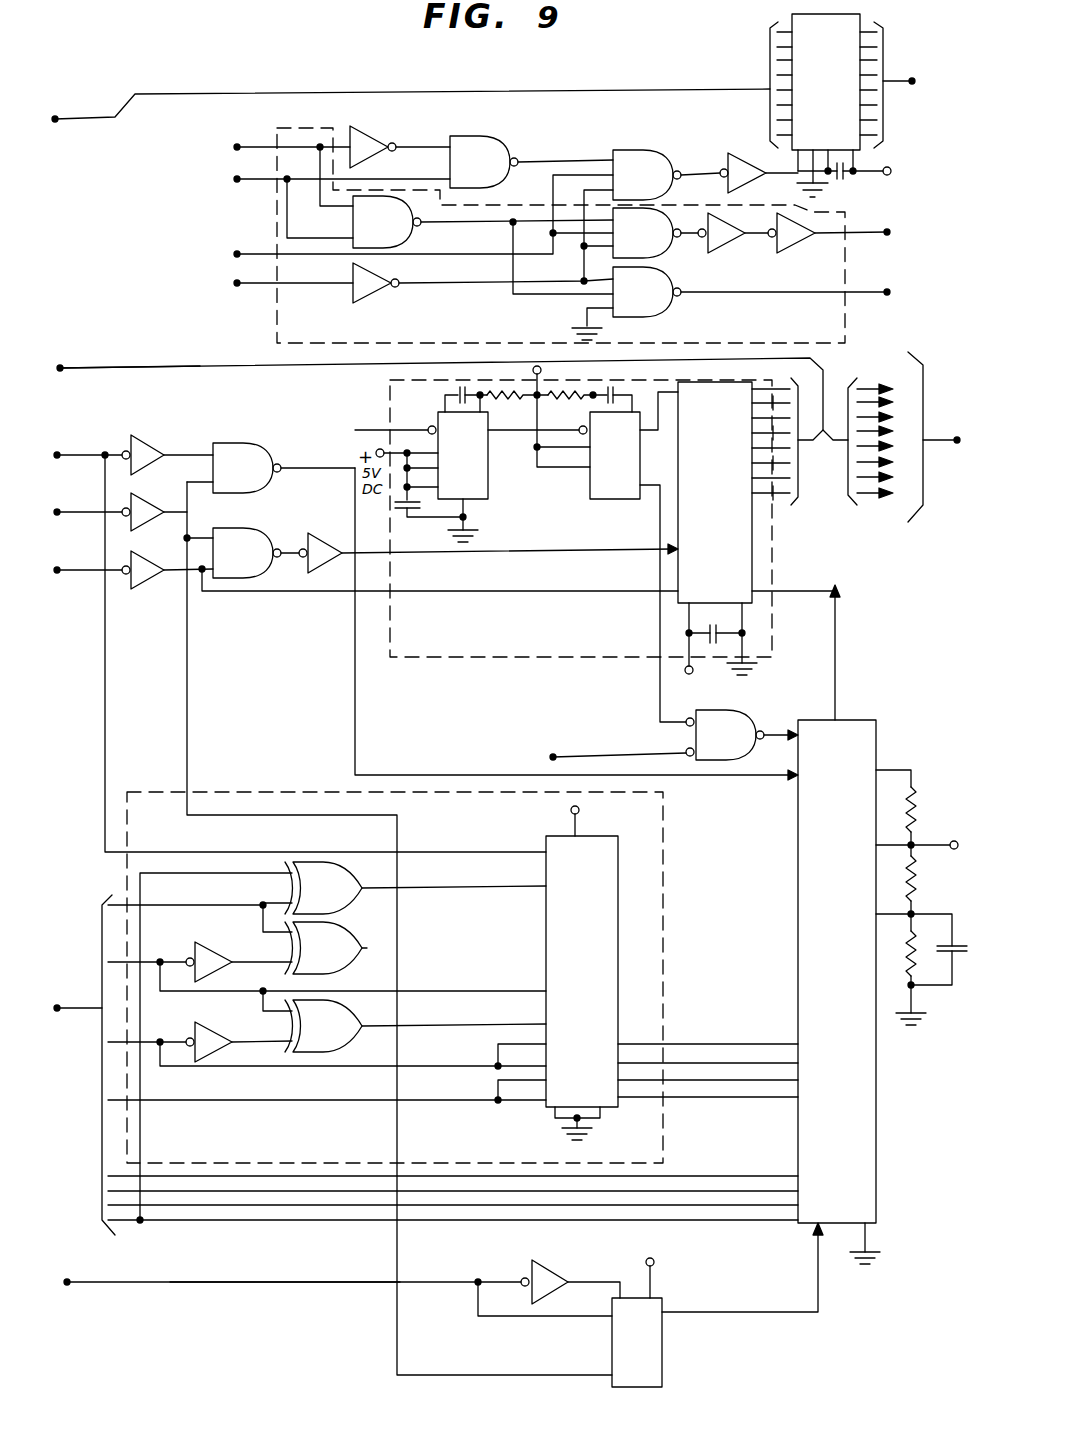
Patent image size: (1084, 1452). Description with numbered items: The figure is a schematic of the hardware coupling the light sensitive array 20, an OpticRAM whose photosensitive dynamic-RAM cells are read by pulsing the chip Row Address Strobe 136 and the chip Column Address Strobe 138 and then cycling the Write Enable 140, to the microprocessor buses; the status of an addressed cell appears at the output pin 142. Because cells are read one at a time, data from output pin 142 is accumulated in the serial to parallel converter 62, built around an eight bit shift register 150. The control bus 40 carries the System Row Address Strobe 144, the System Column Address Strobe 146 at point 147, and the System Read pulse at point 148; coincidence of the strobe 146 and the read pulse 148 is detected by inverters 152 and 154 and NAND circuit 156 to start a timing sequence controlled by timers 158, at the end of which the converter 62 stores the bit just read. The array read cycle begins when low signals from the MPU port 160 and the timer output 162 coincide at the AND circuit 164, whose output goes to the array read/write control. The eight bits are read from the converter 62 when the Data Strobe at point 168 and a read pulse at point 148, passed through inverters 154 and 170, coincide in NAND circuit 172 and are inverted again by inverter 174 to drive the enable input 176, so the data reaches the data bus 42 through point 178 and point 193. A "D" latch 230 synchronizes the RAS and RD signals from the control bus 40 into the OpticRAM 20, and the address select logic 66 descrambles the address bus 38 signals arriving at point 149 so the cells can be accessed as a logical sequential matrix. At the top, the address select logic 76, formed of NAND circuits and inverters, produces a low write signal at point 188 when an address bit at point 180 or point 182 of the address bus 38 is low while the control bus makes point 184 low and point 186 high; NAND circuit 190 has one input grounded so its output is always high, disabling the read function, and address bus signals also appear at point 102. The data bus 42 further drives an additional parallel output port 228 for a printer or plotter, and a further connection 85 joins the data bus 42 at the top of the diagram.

The input line 85 is at (58, 116).
The data bus 42 is at (340, 92).
The additional parallel output port 228 is at (945, 64).
The point 180 is at (240, 143).
The point 182 is at (237, 182).
The point 186 is at (240, 252).
The point 184 is at (236, 285).
The address select logic 76 is at (277, 312).
The point 188 is at (888, 232).
The NAND circuit 190 is at (672, 269).
The point 102 is at (888, 292).
The point 178 is at (62, 366).
The point 147 is at (90, 440).
The inverter 152 is at (150, 436).
The System Read (RD) pulse 148 is at (58, 510).
The inverter 154 is at (150, 494).
The point 168 is at (58, 568).
The inverter 170 is at (160, 600).
The NAND gate 156 is at (236, 443).
The NAND circuit 172 is at (236, 530).
The inverter 174 is at (324, 534).
The enable input 176 is at (672, 553).
The System Column Address Strobe (CAS) 146 is at (108, 708).
The output pin 142 is at (841, 712).
The chip Column Address Strobe (CAS) 138 is at (792, 778).
The serial to parallel converter 62 is at (452, 660).
The timers 158 is at (490, 495).
The output of timers 162 is at (648, 492).
The eight bit shift register 150 is at (753, 548).
The point 193 is at (976, 468).
The AND circuit 164 is at (682, 723).
The MPU port 160 is at (553, 756).
The Write Enable (WE) 140 is at (790, 732).
The light sensitive array 20 is at (880, 1092).
The address bus 38 is at (70, 1006).
The point 149 is at (57, 1012).
The address select logic 66 is at (668, 925).
The System Row Address Strobe (RAS) 144 is at (68, 1283).
The control bus signals 40 is at (172, 1284).
The "D" latch 230 is at (664, 1340).
The chip Row Address Strobe (RAS) 136 is at (814, 1232).